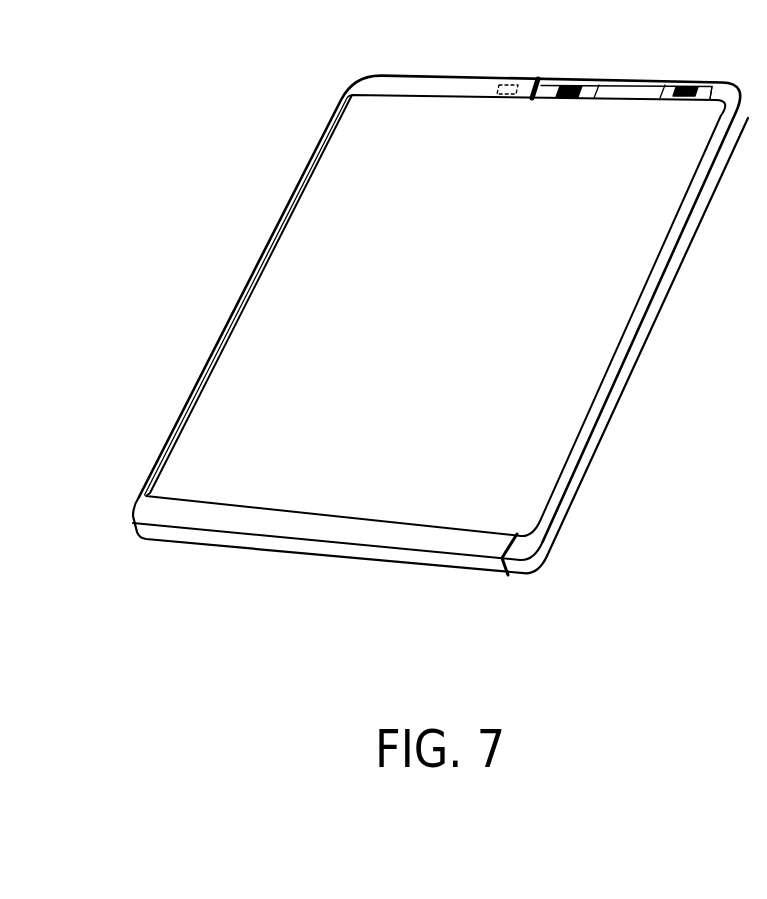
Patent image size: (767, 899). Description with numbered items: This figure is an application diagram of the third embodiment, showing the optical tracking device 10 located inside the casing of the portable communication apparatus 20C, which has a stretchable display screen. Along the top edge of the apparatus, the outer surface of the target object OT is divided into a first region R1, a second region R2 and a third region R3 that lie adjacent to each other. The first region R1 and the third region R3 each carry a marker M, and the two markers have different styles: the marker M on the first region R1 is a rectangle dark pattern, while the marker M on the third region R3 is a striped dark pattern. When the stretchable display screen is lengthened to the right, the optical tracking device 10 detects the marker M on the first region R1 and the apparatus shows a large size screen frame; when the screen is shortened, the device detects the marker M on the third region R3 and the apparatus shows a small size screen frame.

The portable communication apparatus 20C is at (345, 162).
The optical tracking device 10 is at (509, 83).
The target object OT is at (631, 90).
The marker M is at (569, 85).
The first region R1 is at (567, 118).
The second region R2 is at (627, 120).
The third region R3 is at (680, 120).